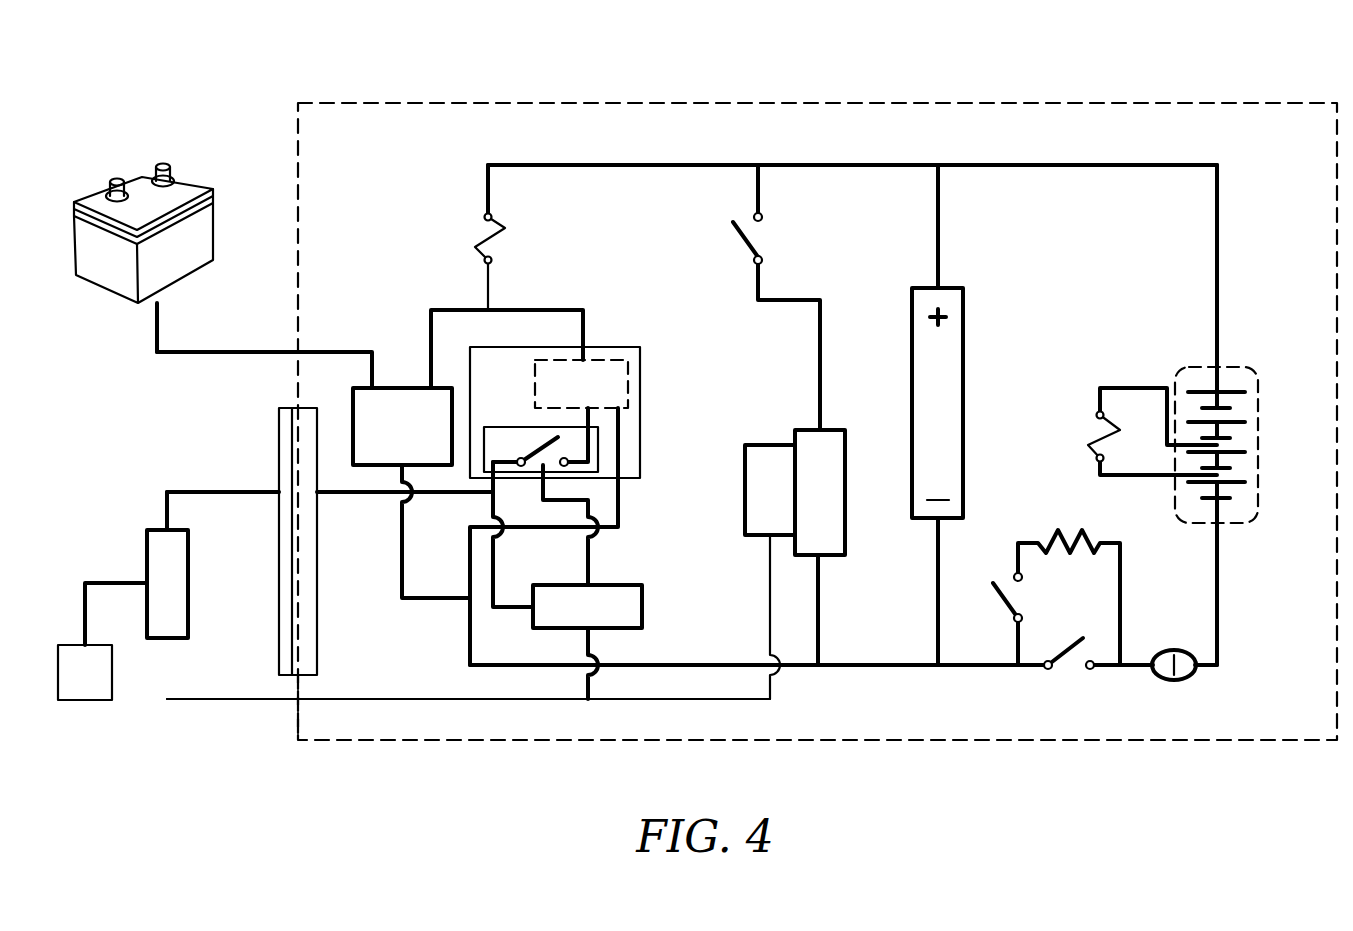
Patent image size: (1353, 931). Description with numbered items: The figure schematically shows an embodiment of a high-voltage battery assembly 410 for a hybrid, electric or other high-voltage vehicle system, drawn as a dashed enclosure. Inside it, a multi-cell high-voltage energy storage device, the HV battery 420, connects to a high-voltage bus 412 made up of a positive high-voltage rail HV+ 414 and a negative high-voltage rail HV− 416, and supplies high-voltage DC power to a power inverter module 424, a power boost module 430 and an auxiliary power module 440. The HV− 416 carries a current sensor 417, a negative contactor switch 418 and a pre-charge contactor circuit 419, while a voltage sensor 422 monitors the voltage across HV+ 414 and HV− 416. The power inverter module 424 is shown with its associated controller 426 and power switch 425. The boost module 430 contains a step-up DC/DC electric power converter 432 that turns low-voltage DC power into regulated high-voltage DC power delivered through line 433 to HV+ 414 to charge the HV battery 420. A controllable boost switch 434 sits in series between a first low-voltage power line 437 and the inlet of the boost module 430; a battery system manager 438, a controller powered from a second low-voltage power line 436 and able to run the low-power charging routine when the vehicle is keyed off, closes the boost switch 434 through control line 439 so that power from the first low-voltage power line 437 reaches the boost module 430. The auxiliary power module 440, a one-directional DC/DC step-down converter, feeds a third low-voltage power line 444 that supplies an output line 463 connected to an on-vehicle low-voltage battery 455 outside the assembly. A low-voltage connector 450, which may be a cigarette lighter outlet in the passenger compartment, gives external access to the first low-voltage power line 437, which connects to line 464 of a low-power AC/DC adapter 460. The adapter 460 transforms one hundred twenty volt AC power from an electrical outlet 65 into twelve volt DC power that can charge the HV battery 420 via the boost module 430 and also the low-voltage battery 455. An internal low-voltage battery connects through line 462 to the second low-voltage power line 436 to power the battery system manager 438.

The high-voltage battery assembly 410 is at (1105, 103).
The high-voltage bus 412 is at (1220, 231).
The positive high-voltage rail (HV+) 414 is at (1077, 168).
The negative high-voltage rail (HV−) 416 is at (868, 667).
The current sensor 417 is at (1187, 683).
The negative contactor switch 418 is at (1070, 668).
The pre-charge contactor circuit 419 is at (1054, 531).
The multi-cell high-voltage energy storage device (HV battery) 420 is at (1232, 365).
The voltage sensor 422 is at (965, 393).
The power inverter module 424 is at (845, 517).
The power switch 425 is at (760, 238).
The controller 426 is at (770, 443).
The power boost module 430 is at (620, 345).
The step-up DC/DC electric power converter 432 is at (563, 397).
The line 433 is at (532, 308).
The controllable boost switch 434 is at (600, 448).
The second low-voltage power line 436 is at (435, 698).
The first low-voltage power line 437 is at (338, 495).
The battery system manager 438 is at (643, 607).
The control line 439 is at (600, 567).
The auxiliary power module 440 is at (407, 387).
The third low-voltage power line 444 is at (317, 350).
The low-voltage connector 450 is at (297, 678).
The on-vehicle low-voltage battery 455 is at (188, 185).
The low-power AC/DC adapter 460 is at (145, 543).
The line 462 is at (247, 697).
The output line 463 is at (160, 317).
The line 464 is at (238, 490).
The electrical outlet 65 is at (70, 685).